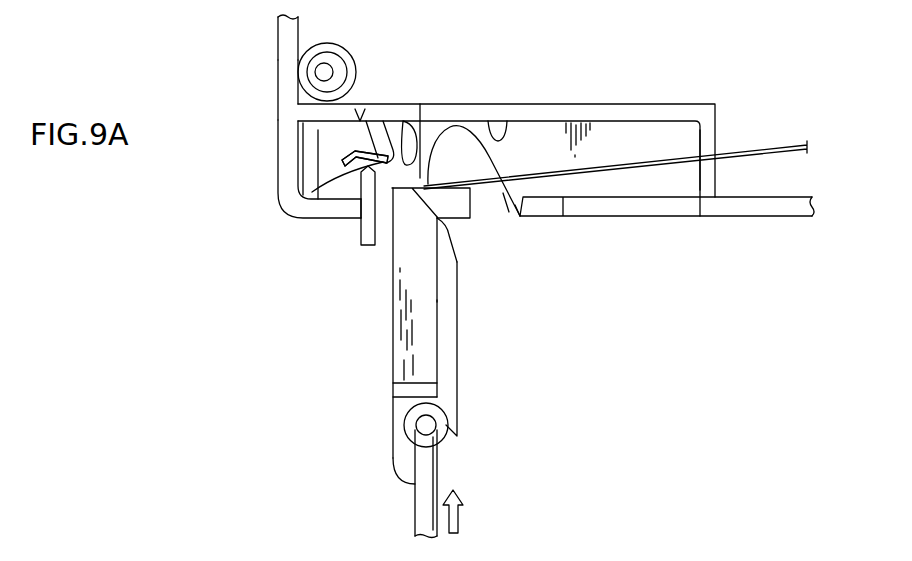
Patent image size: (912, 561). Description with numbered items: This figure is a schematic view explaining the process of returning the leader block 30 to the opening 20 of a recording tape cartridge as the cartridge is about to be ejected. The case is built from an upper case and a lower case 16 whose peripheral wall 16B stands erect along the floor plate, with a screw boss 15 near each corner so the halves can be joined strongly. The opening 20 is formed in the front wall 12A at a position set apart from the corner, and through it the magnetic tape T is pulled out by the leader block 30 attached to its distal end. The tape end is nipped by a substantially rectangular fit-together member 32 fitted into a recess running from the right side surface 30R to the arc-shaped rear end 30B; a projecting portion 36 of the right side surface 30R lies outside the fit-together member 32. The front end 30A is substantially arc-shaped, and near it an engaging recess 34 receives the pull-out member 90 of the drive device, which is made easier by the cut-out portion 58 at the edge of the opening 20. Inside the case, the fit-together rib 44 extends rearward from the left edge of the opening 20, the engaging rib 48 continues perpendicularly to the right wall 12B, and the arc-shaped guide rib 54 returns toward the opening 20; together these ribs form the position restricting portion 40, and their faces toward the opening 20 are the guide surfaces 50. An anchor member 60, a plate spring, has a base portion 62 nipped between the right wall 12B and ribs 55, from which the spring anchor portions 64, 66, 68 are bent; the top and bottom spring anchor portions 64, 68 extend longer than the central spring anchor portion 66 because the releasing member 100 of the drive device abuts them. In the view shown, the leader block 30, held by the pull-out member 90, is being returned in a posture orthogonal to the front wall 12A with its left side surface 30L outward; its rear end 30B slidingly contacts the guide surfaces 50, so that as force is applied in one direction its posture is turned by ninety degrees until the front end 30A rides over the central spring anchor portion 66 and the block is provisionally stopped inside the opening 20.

The lower case 16 is at (266, 44).
The peripheral wall 16B is at (278, 68).
The screw boss 15 is at (323, 72).
The right wall 12B is at (278, 123).
The ribs 55 is at (313, 150).
The base portion 62 is at (303, 165).
The spring anchor portion 64 is at (343, 160).
The spring anchor portion 68 is at (365, 158).
The guide rib 54 is at (367, 140).
The anchor member 60 is at (360, 118).
The spring anchor portion 66 is at (413, 133).
The fit-together member 32 is at (388, 222).
The releasing member 100 is at (361, 232).
The position restricting portion 40 is at (728, 100).
The engaging rib 48 is at (630, 103).
The fit-together rib 44 is at (713, 177).
The guide surfaces 50 is at (507, 121).
The rear end 30B is at (445, 128).
The magnetic tape T is at (743, 150).
The front wall 12A is at (743, 215).
The cut-out portion 58 is at (515, 212).
The opening 20 is at (503, 193).
The leader block 30 is at (473, 393).
The right side surface 30R is at (393, 333).
The left side surface 30L is at (457, 335).
The projecting portion 36 is at (423, 297).
The front end 30A is at (412, 484).
The pull-out member 90 is at (443, 433).
The engaging recess 34 is at (440, 477).